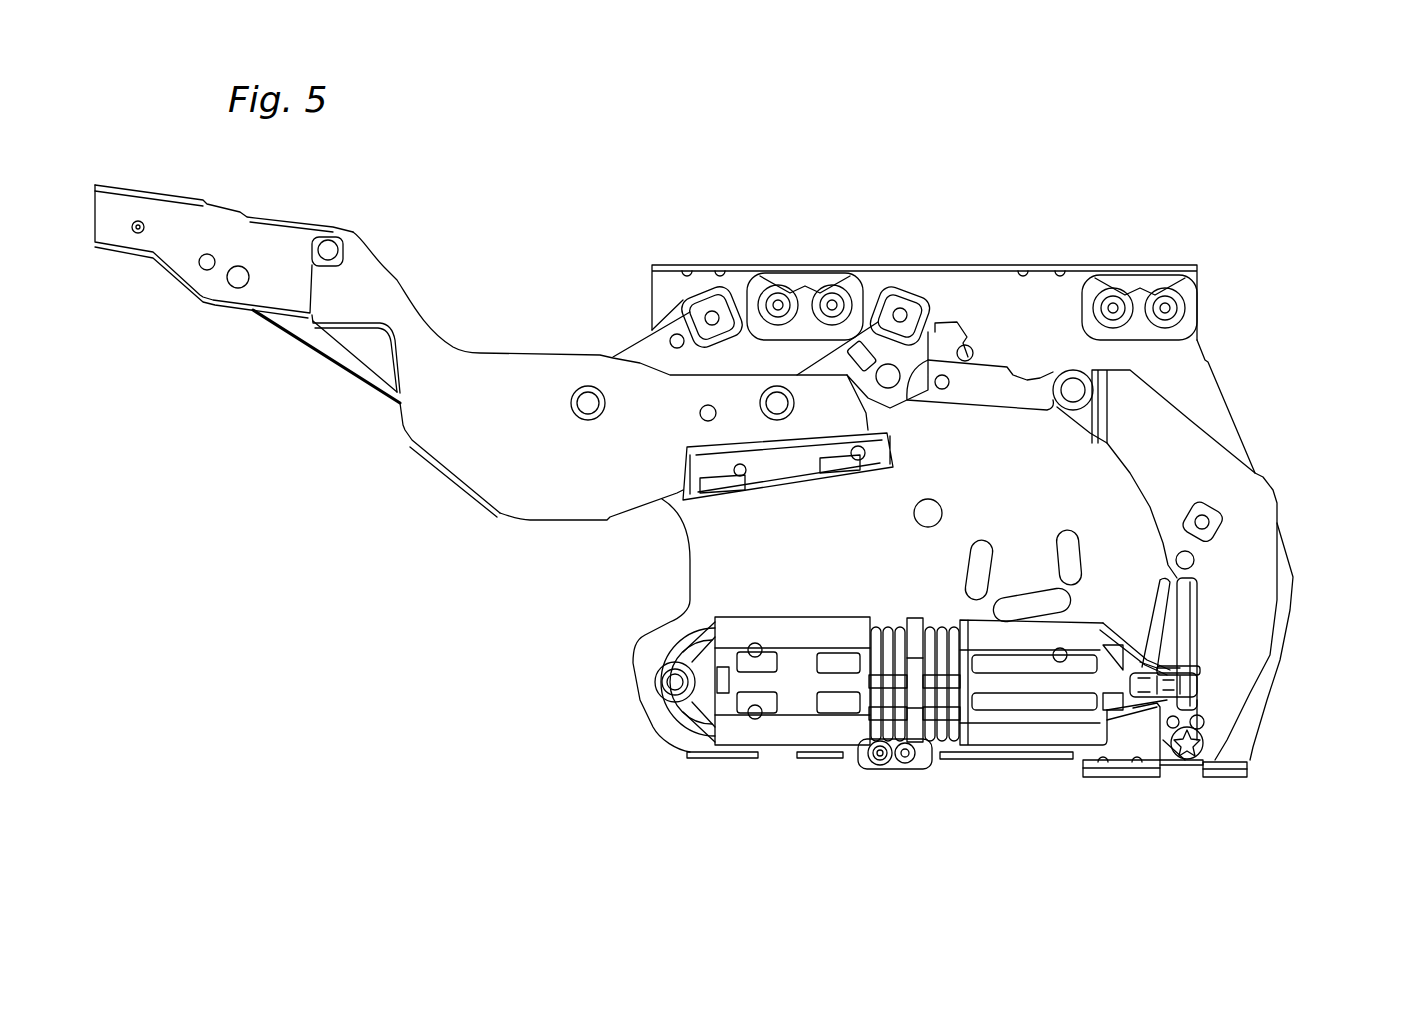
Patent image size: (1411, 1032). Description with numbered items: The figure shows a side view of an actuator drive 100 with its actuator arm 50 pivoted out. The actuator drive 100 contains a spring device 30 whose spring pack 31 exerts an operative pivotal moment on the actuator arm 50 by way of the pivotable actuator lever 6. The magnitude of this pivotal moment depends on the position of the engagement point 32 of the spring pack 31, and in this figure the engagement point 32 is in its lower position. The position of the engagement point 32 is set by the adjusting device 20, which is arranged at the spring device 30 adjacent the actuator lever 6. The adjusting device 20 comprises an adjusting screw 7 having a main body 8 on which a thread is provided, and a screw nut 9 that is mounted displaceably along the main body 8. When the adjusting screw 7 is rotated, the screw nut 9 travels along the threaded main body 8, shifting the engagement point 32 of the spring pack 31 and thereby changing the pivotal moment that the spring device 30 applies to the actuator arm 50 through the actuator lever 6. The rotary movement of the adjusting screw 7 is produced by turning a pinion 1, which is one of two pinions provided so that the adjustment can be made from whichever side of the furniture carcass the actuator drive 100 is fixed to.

The actuator drive 100 is at (856, 228).
The actuator arm 50 is at (272, 288).
The actuator lever 6 is at (1237, 568).
The main body 8 is at (1190, 608).
The adjusting screw 7 is at (1187, 635).
The screw nut 9 is at (1187, 672).
The engagement point 32 is at (1195, 685).
The spring device 30 is at (912, 754).
The spring pack 31 is at (830, 705).
The adjusting device 20 is at (1202, 695).
The pinion 1 is at (1193, 750).